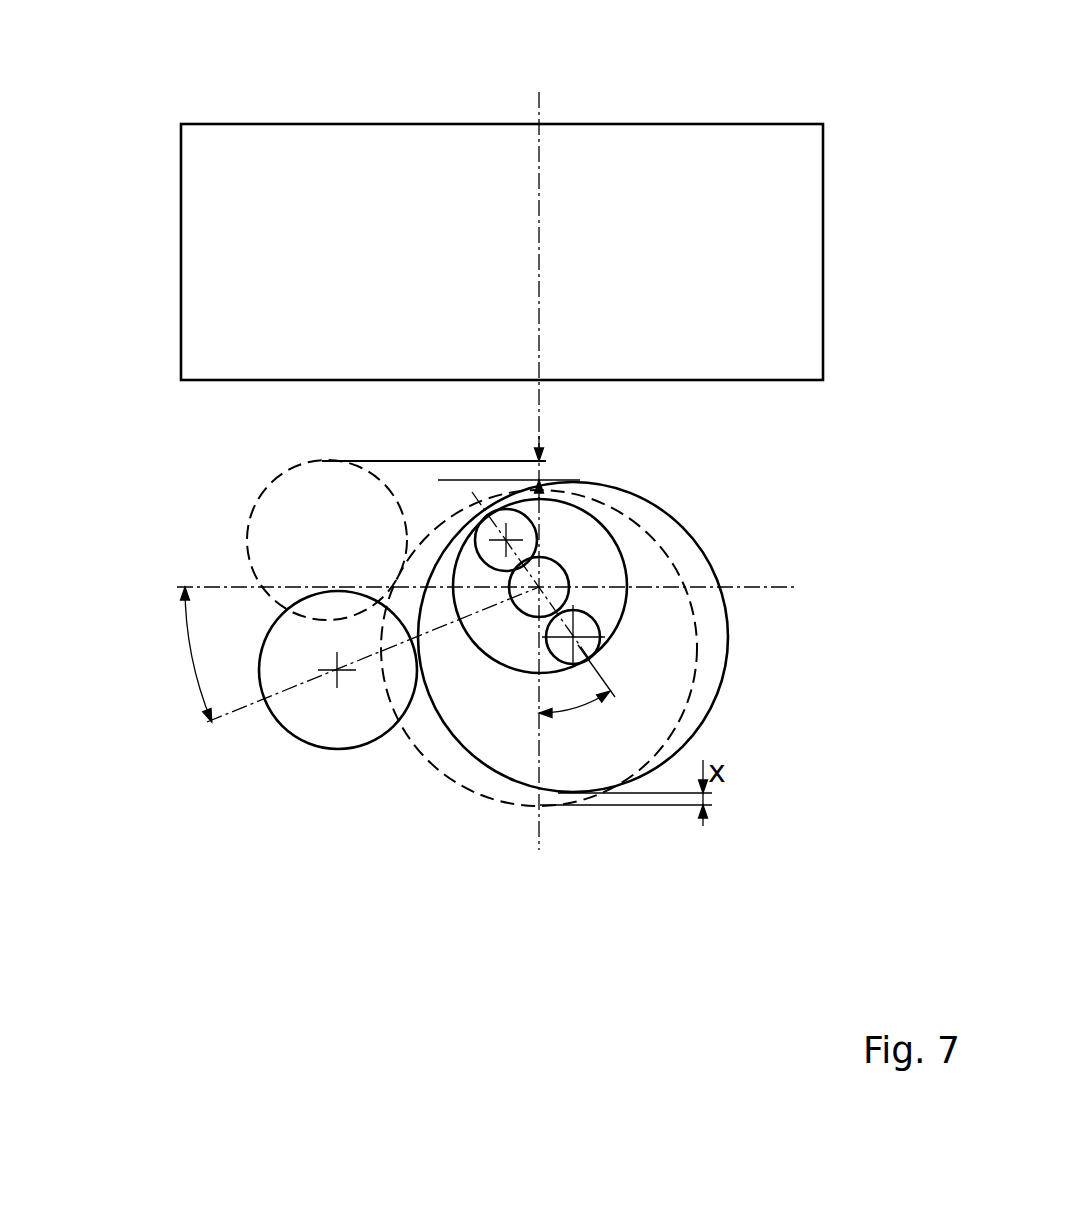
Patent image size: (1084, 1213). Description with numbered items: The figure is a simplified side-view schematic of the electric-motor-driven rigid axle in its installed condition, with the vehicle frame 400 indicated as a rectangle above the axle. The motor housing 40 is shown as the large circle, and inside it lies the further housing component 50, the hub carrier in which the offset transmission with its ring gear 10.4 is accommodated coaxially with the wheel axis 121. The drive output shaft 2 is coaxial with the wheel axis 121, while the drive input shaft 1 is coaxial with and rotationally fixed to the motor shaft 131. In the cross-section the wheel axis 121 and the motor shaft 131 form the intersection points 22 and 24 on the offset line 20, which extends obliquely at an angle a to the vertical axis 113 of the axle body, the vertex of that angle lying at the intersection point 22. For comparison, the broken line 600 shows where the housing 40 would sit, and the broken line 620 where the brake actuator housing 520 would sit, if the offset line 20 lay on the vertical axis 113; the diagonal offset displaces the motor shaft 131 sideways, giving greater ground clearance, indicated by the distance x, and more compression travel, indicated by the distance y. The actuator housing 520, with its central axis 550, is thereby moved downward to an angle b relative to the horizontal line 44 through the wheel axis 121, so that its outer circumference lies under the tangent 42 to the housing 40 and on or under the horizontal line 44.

The vehicle frame 400 is at (668, 197).
The tangent 42 is at (458, 480).
The broken line 620 is at (265, 491).
The horizontal line 44 is at (230, 587).
The housing 40 is at (665, 505).
The drive output shaft 2 is at (575, 607).
The wheel axis 121 is at (539, 587).
The intersection point 22 is at (565, 600).
The intersection point 24 is at (578, 626).
The drive input shaft 1 is at (758, 712).
The motor shaft 131 is at (573, 637).
The broken line 600 is at (593, 648).
The actuator housing 520 is at (292, 781).
The central axis 550 is at (285, 728).
The further housing component 50 is at (502, 737).
The ring gear 10.4 is at (483, 660).
The vertical axis 113 is at (539, 835).
The offset line 20 is at (612, 681).